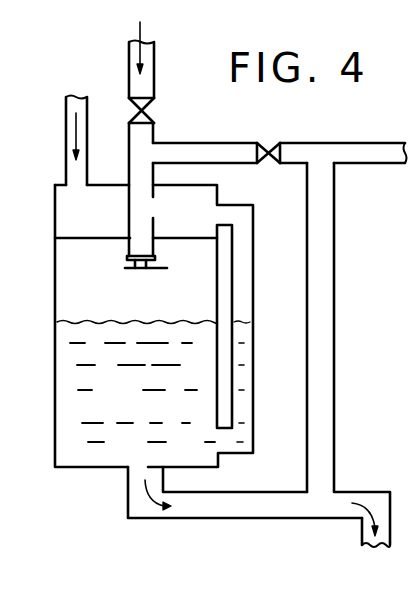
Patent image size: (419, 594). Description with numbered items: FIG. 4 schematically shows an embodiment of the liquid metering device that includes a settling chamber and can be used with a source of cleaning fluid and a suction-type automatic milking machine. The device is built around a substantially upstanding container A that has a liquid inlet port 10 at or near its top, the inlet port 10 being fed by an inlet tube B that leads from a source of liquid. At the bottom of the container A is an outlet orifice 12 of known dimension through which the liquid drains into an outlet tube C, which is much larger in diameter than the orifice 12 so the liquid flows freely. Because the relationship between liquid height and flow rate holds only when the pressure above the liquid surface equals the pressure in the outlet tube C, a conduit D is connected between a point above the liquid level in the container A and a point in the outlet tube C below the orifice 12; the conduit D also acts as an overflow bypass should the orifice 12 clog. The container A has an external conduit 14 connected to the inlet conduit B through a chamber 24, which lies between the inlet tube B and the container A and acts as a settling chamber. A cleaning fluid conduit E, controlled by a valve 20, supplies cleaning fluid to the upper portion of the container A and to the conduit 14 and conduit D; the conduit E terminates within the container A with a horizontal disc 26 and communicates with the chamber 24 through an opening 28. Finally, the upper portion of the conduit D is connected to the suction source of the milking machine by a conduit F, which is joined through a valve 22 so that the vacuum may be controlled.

The liquid inlet port 10 is at (80, 188).
The outlet orifice 12 is at (142, 468).
The external conduit 14 is at (254, 258).
The valve 20 is at (154, 118).
The valve 22 is at (268, 152).
The chamber 24 is at (205, 226).
The horizontal disc 26 is at (126, 270).
The opening 28 is at (153, 210).
The container A is at (52, 397).
The inlet tube B is at (63, 124).
The outlet tube C is at (360, 537).
The conduit D is at (340, 243).
The conduit E is at (126, 66).
The conduit F is at (347, 143).